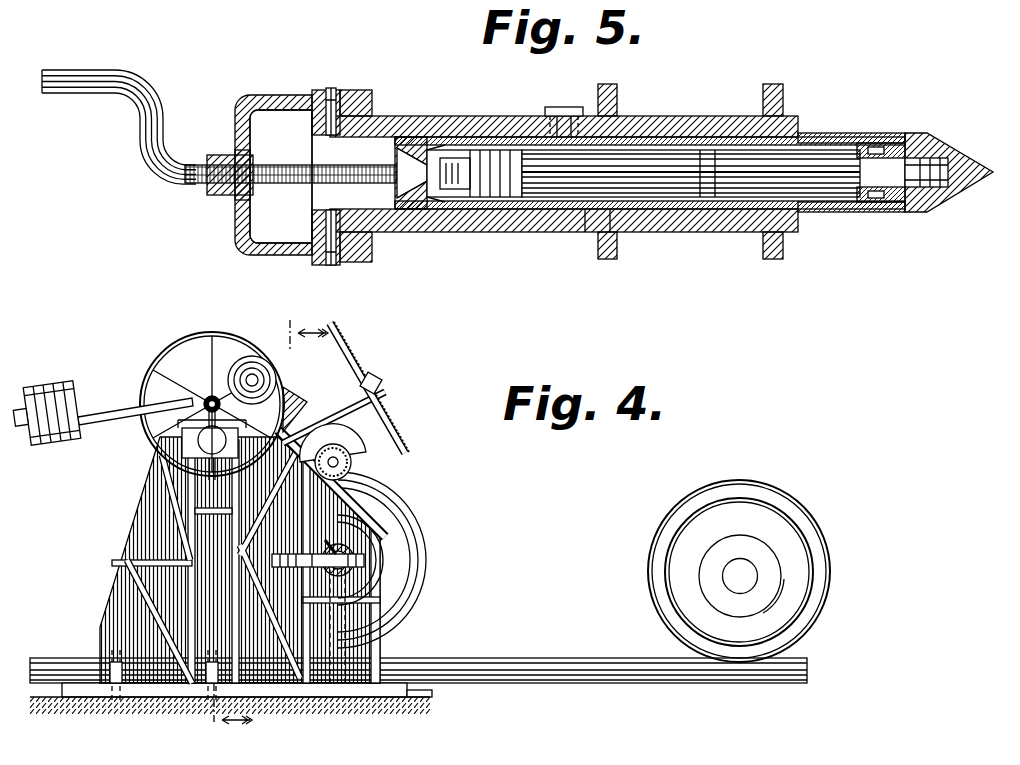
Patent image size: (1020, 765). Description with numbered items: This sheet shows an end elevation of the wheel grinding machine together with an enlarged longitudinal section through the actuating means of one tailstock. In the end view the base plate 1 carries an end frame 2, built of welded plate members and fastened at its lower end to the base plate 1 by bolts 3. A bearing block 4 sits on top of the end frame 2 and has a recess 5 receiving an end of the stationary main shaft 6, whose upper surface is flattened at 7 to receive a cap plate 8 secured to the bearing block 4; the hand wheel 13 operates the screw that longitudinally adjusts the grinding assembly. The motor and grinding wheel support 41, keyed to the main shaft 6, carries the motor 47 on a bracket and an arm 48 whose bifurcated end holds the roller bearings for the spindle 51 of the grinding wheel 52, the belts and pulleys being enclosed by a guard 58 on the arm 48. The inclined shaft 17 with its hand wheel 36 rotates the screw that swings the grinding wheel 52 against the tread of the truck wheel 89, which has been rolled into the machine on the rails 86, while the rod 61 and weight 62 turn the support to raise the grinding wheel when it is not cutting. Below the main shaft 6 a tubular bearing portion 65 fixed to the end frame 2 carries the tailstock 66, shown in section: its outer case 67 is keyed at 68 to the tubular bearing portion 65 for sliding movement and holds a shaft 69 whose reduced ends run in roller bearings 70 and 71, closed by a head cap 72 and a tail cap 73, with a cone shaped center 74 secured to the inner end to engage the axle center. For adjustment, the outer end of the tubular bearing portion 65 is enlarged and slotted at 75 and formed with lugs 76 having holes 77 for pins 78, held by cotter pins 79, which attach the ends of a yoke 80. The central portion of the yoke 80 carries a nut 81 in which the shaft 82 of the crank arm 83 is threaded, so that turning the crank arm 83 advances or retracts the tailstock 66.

In FIG. 4, the base plate 1 is at (293, 701).
In FIG. 5, the end frames 2 is at (762, 252).
In FIG. 4, the end frames 2 is at (126, 611).
In FIG. 4, the bolts 3 is at (146, 716).
In FIG. 4, the bearing block 4 is at (196, 438).
In FIG. 4, the recess 5 is at (210, 450).
In FIG. 4, the stationary main shaft 6 is at (212, 465).
In FIG. 4, the flattened surfaces 7 is at (180, 426).
In FIG. 4, the cap plates 8 is at (196, 430).
In FIG. 4, the hand wheels 13 is at (183, 343).
In FIG. 4, the shaft 17 is at (362, 396).
In FIG. 4, the hand wheel 36 is at (401, 432).
In FIG. 4, the motor and grinding wheel support 41 is at (209, 397).
In FIG. 4, the motor 47 is at (258, 356).
In FIG. 4, the arm 48 is at (318, 425).
In FIG. 4, the spindle 51 is at (349, 433).
In FIG. 4, the grinding wheel 52 is at (354, 470).
In FIG. 4, the guard 58 is at (300, 408).
In FIG. 4, the rod 61 is at (101, 418).
In FIG. 4, the weight 62 is at (50, 442).
In FIG. 5, the tubular bearing portion 65 is at (531, 233).
In FIG. 4, the tubular bearing portion 65 is at (395, 580).
In FIG. 5, the tailstock 66 is at (843, 214).
In FIG. 5, the outer case 67 is at (596, 212).
In FIG. 5, the key 68 is at (556, 110).
In FIG. 5, the shaft 69 is at (684, 147).
In FIG. 5, the roller bearing 70 is at (463, 145).
In FIG. 5, the roller bearing 71 is at (877, 142).
In FIG. 5, the head cap 72 is at (897, 212).
In FIG. 5, the tail cap 73 is at (421, 139).
In FIG. 5, the cone shaped center 74 is at (972, 186).
In FIG. 5, the slot 75 is at (362, 95).
In FIG. 5, the lugs 76 is at (321, 95).
In FIG. 4, the lugs 76 is at (356, 566).
In FIG. 5, the holes 77 is at (312, 115).
In FIG. 5, the pins 78 is at (314, 141).
In FIG. 5, the cotter pins 79 is at (334, 92).
In FIG. 5, the yoke 80 is at (241, 236).
In FIG. 5, the nut 81 is at (212, 145).
In FIG. 4, the nut 81 is at (372, 600).
In FIG. 5, the shaft 82 is at (201, 186).
In FIG. 5, the crank arm 83 is at (97, 89).
In FIG. 4, the crank arm 83 is at (370, 524).
In FIG. 4, the rails 86 is at (518, 660).
In FIG. 4, the wheels 89 is at (426, 555).